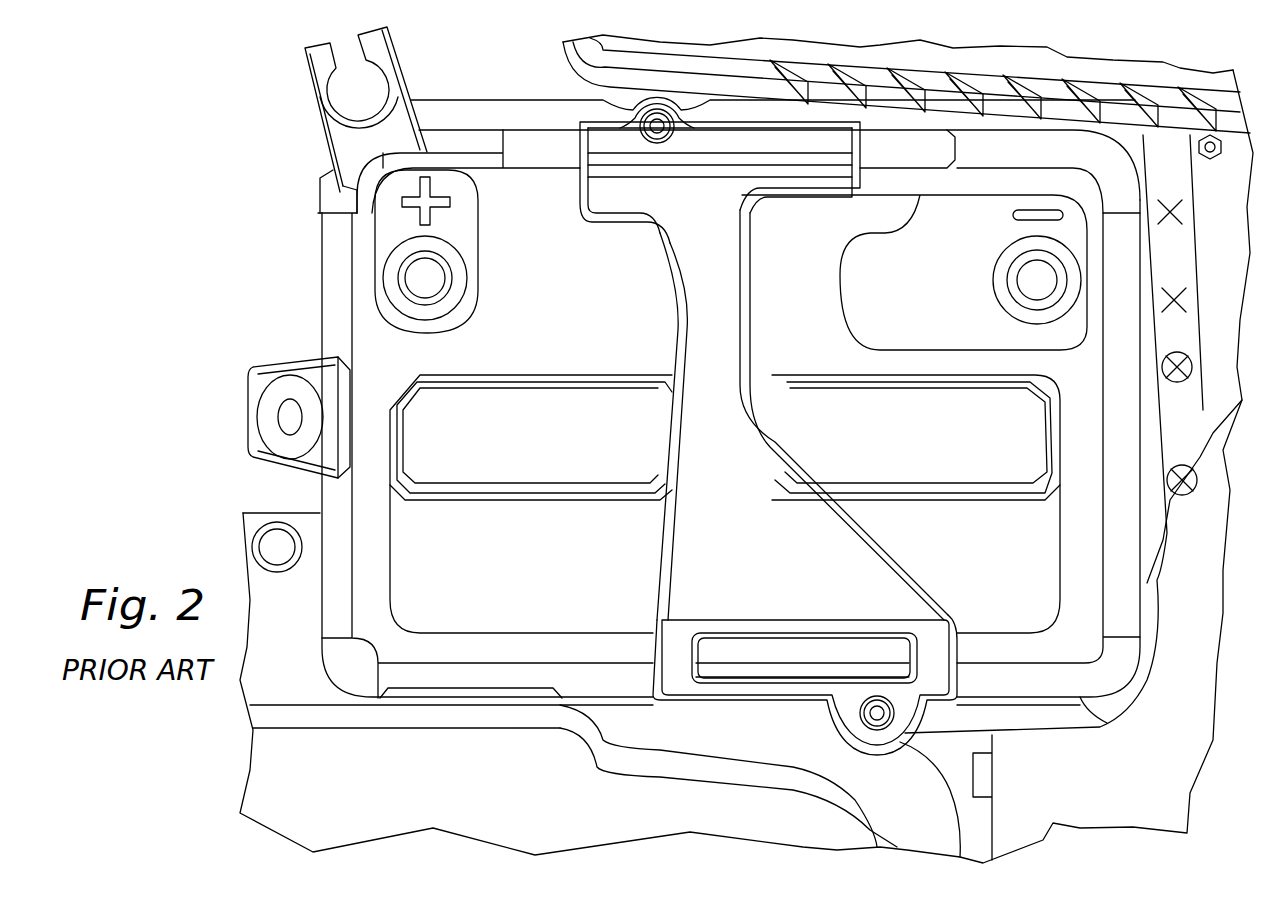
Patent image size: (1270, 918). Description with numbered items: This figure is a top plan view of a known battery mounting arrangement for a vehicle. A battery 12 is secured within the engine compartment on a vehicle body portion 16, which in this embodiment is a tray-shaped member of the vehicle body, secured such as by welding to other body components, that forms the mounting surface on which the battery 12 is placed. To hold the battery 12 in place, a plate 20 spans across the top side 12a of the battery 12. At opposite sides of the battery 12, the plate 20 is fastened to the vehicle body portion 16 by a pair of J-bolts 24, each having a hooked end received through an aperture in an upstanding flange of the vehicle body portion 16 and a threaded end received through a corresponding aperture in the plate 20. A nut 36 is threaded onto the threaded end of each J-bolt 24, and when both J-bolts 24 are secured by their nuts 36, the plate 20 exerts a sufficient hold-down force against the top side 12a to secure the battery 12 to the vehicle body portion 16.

The battery 12 is at (393, 355).
The top side of the battery 12a is at (892, 459).
The vehicle body portion 16 is at (993, 707).
The plate 20 is at (722, 527).
The J-bolt 24 is at (650, 130).
The nut 36 is at (657, 132).